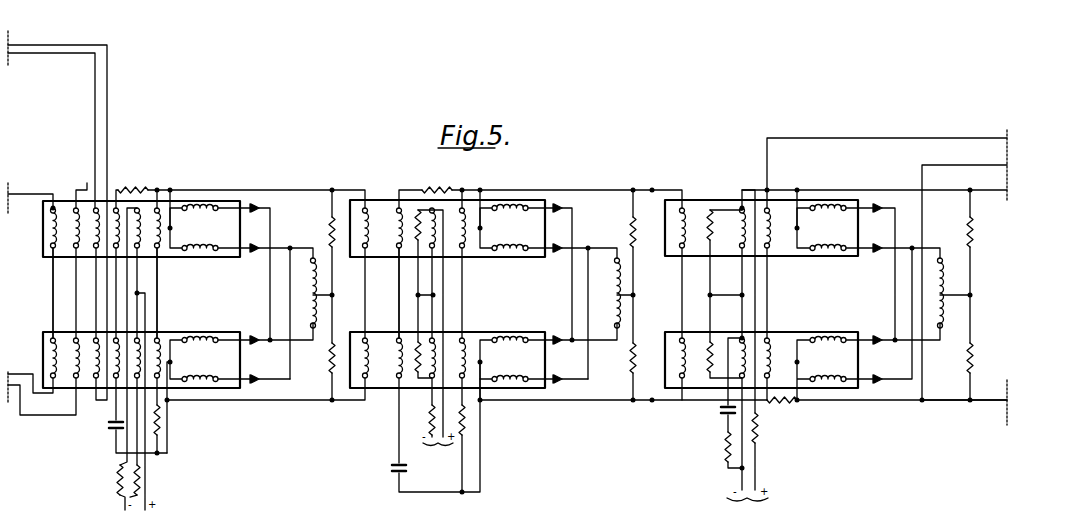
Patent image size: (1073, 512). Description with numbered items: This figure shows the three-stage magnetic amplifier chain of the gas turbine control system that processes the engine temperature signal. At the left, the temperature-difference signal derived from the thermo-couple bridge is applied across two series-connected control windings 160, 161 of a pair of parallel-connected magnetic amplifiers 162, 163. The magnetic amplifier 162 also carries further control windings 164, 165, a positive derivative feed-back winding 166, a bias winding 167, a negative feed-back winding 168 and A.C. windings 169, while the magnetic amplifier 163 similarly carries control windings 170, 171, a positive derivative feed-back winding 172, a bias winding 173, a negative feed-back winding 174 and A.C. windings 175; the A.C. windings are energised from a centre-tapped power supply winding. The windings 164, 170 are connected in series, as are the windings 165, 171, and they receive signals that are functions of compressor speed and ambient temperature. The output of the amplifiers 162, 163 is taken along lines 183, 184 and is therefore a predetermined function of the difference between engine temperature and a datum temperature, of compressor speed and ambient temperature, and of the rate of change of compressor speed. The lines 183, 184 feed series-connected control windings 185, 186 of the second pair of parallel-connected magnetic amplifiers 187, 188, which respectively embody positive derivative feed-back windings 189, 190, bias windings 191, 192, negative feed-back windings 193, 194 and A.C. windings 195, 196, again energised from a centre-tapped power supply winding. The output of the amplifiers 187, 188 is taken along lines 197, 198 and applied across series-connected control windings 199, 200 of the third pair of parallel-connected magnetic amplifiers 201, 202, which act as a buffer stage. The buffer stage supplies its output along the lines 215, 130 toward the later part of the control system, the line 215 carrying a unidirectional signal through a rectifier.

The output line 130 is at (993, 397).
The control winding 160 is at (82, 207).
The control winding 161 is at (96, 380).
The magnetic amplifier 162 is at (210, 257).
The magnetic amplifier 163 is at (230, 332).
The control winding 164 is at (51, 211).
The control winding 165 is at (53, 249).
The positive derivative feed-back winding 166 is at (115, 208).
The bias winding 167 is at (150, 206).
The negative feed-back winding 168 is at (160, 250).
The A.C. windings 169 is at (216, 210).
The control winding 170 is at (51, 372).
The control winding 171 is at (74, 340).
The positive derivative feed-back winding 172 is at (118, 339).
The bias winding 173 is at (134, 346).
The negative feed-back winding 174 is at (170, 363).
The A.C. windings 175 is at (216, 341).
The output line 183 is at (352, 189).
The output line 184 is at (351, 398).
The control winding 185 is at (362, 226).
The control winding 186 is at (365, 380).
The magnetic amplifier 187 is at (397, 258).
The magnetic amplifier 188 is at (378, 334).
The positive derivative feed-back winding 189 is at (396, 222).
The positive derivative feed-back winding 190 is at (419, 384).
The bias winding 191 is at (435, 222).
The bias winding 192 is at (461, 347).
The negative feed-back winding 193 is at (461, 250).
The negative feed-back winding 194 is at (481, 363).
The A.C. windings 195 is at (504, 228).
The A.C. windings 196 is at (504, 359).
The output line 197 is at (681, 189).
The output line 198 is at (672, 403).
The control winding 199 is at (684, 216).
The control winding 200 is at (680, 345).
The magnetic amplifier 201 is at (730, 253).
The magnetic amplifier 202 is at (720, 335).
The output line 215 is at (941, 191).